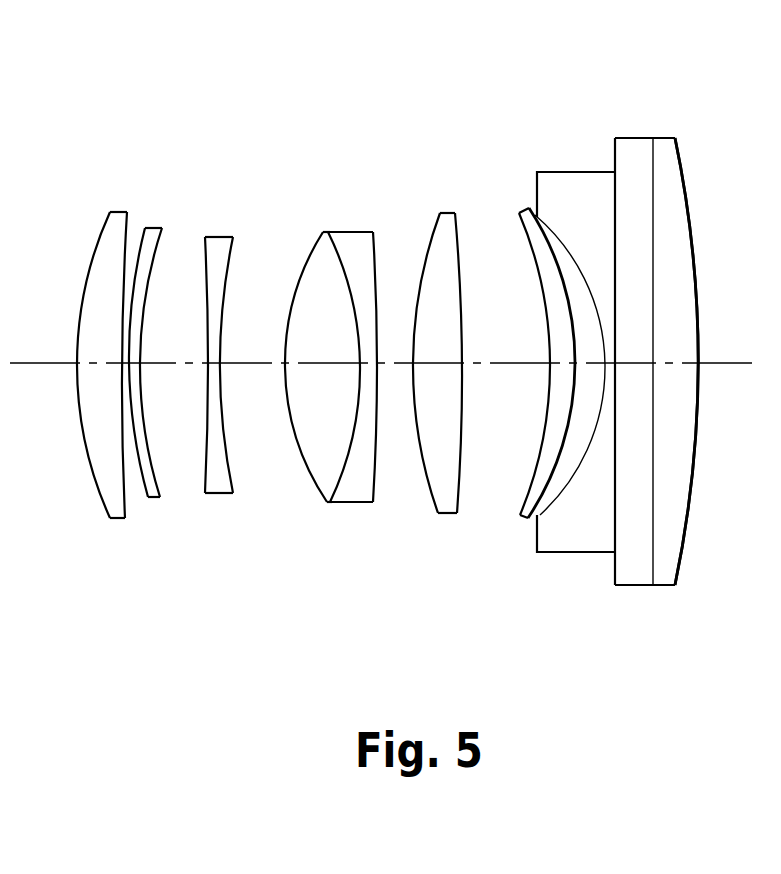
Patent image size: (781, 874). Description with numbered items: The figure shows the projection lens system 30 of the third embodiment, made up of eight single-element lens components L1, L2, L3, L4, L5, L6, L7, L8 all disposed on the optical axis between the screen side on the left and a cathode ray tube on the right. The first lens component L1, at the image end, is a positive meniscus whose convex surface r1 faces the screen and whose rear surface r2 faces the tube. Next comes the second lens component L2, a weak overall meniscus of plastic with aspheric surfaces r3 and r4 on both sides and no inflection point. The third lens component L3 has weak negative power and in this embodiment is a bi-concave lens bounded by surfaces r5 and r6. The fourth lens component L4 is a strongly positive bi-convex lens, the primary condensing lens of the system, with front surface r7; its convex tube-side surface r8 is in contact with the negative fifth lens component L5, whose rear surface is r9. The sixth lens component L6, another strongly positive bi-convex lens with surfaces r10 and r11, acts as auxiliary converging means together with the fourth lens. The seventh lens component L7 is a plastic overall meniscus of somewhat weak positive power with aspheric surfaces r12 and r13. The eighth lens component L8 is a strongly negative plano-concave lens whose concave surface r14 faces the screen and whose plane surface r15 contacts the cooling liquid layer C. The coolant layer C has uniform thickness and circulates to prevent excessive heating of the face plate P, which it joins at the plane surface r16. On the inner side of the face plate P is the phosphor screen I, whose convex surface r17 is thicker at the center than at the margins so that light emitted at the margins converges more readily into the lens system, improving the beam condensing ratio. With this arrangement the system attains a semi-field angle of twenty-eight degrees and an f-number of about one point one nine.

The lens system 30 is at (84, 56).
The first lens component L1 is at (117, 210).
The second lens component L2 is at (150, 227).
The third lens component L3 is at (220, 236).
The fourth lens component L4 is at (318, 232).
The fifth lens component L5 is at (367, 231).
The sixth lens component L6 is at (445, 212).
The seventh lens component L7 is at (521, 211).
The eighth lens component L8 is at (577, 171).
The cooling liquid layer C is at (626, 137).
The face plate P is at (671, 137).
The phosphor screen I is at (690, 176).
The surface r1 is at (101, 506).
The surface r2 is at (122, 522).
The surface r3 is at (150, 499).
The surface r4 is at (144, 453).
The surface r5 is at (210, 496).
The surface r6 is at (232, 443).
The surface r7 is at (305, 476).
The surface r8 is at (340, 488).
The surface r9 is at (370, 505).
The surface r10 is at (433, 486).
The surface r11 is at (462, 457).
The surface r12 is at (540, 486).
The surface r13 is at (528, 522).
The surface r14 is at (560, 526).
The surface r15 is at (614, 560).
The surface r16 is at (654, 588).
The surface r17 is at (686, 548).